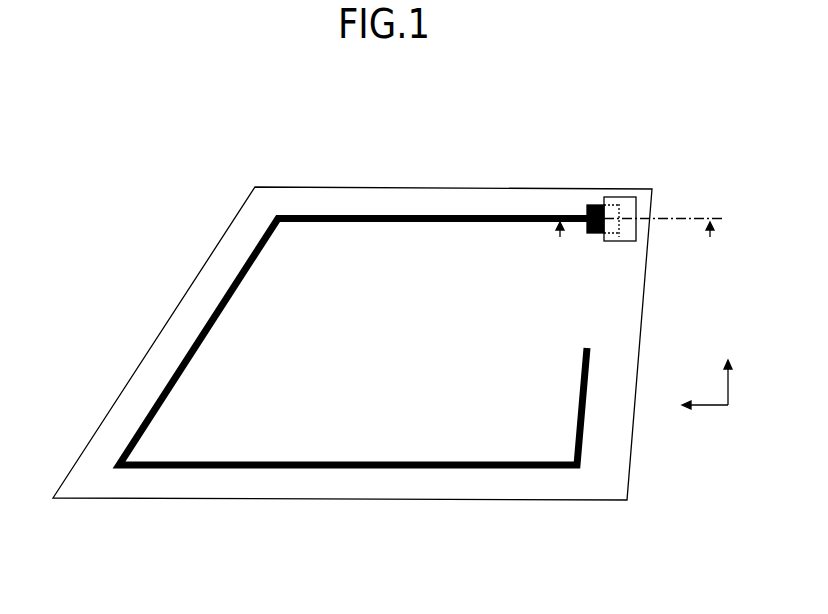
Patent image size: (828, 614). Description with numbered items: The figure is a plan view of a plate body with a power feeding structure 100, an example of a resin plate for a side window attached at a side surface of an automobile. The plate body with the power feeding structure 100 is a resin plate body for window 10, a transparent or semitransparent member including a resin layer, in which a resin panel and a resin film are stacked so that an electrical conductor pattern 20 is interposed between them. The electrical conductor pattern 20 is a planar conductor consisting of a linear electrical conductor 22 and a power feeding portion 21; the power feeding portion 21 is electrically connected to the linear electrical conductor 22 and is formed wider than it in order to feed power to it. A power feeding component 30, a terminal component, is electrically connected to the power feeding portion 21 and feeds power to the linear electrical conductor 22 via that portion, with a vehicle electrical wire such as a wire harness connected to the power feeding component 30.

The plate body with a power feeding structure 100 is at (165, 122).
The resin plate body for window 10 is at (353, 200).
The electrical conductor pattern 20 is at (608, 134).
The power feeding portion 21 is at (593, 204).
The linear electrical conductor 22 is at (521, 214).
The power feeding component 30 is at (618, 241).